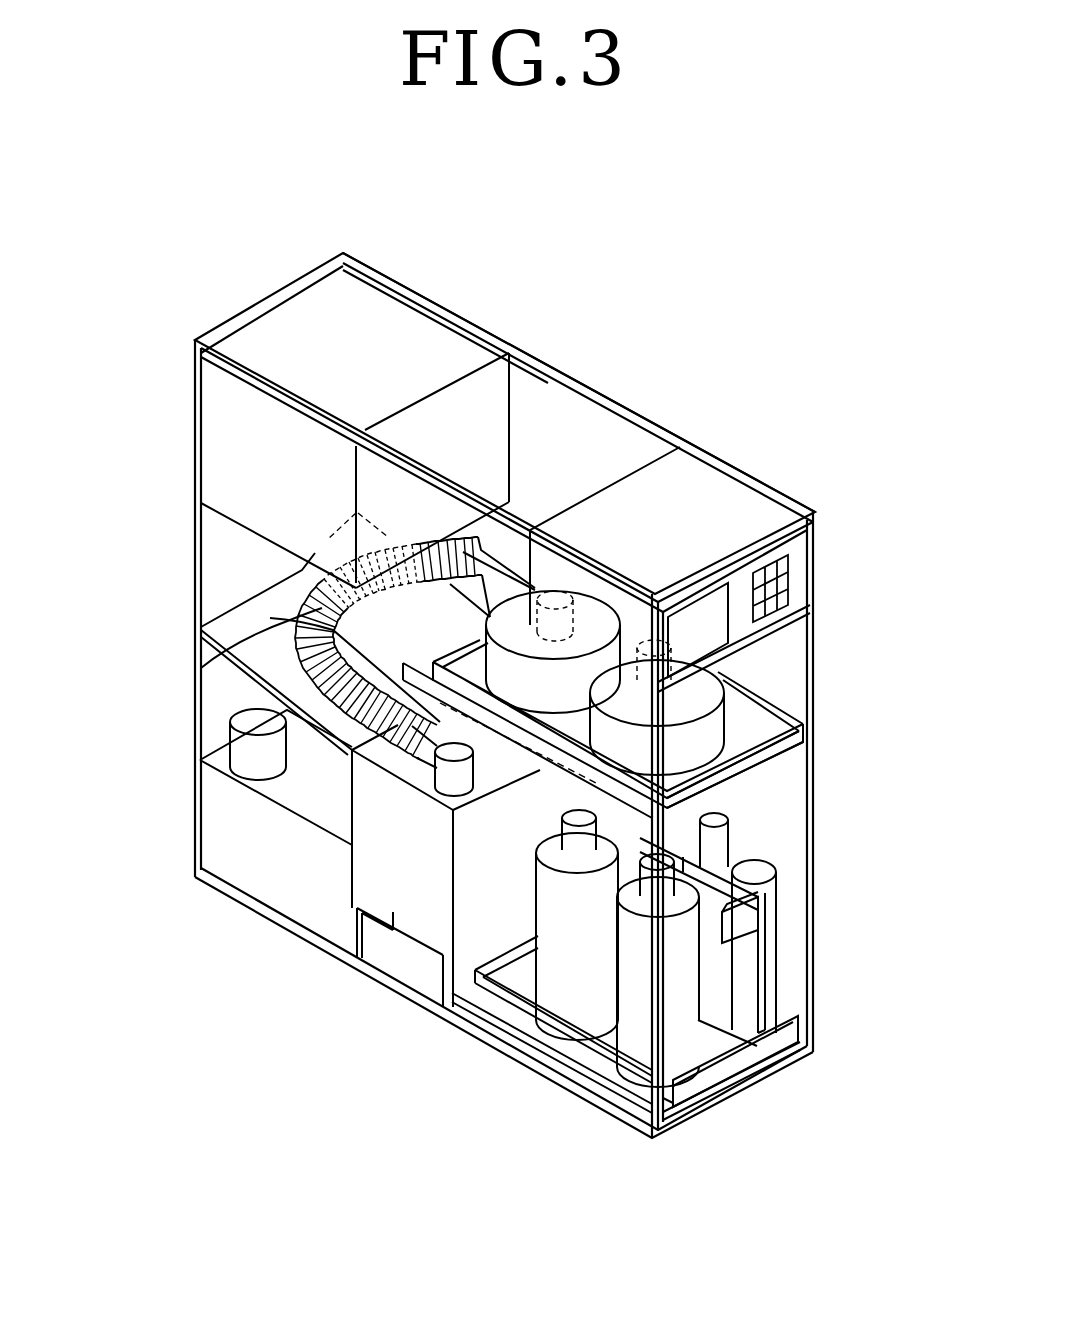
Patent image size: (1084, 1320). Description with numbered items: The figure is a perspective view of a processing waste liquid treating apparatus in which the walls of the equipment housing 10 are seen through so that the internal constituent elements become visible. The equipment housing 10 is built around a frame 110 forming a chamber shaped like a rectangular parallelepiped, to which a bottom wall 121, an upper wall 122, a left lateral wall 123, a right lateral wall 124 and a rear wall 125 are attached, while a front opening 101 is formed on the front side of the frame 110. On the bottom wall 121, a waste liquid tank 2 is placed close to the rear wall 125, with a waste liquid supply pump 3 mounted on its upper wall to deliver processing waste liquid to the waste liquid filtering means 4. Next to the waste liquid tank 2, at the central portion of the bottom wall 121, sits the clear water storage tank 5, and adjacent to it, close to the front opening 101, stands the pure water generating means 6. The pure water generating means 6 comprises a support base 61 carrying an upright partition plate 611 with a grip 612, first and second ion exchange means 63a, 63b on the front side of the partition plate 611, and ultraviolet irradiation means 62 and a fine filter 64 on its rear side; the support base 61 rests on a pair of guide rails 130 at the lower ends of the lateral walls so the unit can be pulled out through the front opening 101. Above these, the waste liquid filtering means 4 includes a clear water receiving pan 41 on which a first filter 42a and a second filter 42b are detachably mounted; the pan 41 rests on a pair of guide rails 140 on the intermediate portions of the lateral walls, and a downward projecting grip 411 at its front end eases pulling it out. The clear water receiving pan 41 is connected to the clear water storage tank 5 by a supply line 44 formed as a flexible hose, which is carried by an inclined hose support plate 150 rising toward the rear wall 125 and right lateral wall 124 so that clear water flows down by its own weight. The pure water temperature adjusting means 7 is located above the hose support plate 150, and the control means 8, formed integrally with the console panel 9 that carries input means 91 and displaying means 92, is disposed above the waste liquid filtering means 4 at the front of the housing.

The equipment housing 10 is at (602, 327).
The frame 110 is at (290, 272).
The waste liquid tank 2 is at (254, 880).
The bottom wall 121 is at (583, 1110).
The upper wall 122 is at (603, 432).
The right lateral wall 124 is at (482, 316).
The pure water temperature adjusting means 7 is at (383, 312).
The control means 8 is at (700, 490).
The rear wall 125 is at (194, 482).
The left lateral wall 123 is at (232, 562).
The hose support plate 150 is at (235, 630).
The clear water storage tank 5 is at (345, 895).
The waste liquid supply pump 3 is at (228, 738).
The supply line 44 is at (298, 612).
The guide rails 140 is at (550, 780).
The waste liquid filtering means 4 is at (742, 672).
The clear water receiving pan 41 is at (774, 790).
The front opening 101 is at (784, 802).
The first filter 42a is at (585, 595).
The second filter 42b is at (710, 721).
The console panel 9 is at (820, 533).
The displaying means 92 is at (693, 605).
The input means 91 is at (790, 573).
The pure water generating means 6 is at (510, 935).
The first ion exchange means 63a is at (549, 845).
The second ion exchange means 63b is at (687, 988).
The ultraviolet irradiation means 62 is at (734, 828).
The grip 411 is at (685, 836).
The fine filter 64 is at (778, 889).
The partition plate 611 is at (737, 962).
The grip 612 is at (743, 922).
The guide rails 130 is at (497, 1024).
The support base 61 is at (700, 1085).